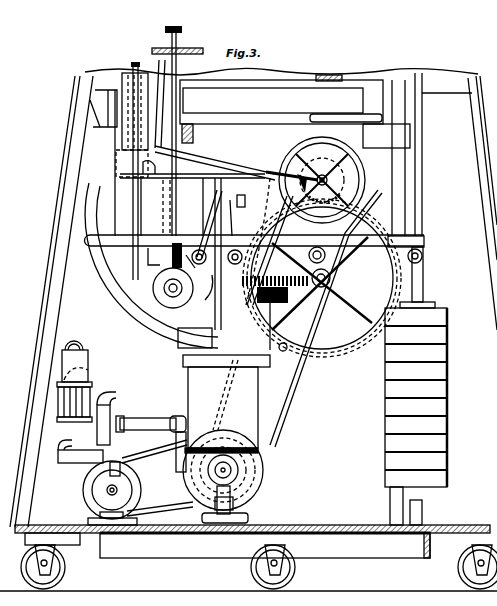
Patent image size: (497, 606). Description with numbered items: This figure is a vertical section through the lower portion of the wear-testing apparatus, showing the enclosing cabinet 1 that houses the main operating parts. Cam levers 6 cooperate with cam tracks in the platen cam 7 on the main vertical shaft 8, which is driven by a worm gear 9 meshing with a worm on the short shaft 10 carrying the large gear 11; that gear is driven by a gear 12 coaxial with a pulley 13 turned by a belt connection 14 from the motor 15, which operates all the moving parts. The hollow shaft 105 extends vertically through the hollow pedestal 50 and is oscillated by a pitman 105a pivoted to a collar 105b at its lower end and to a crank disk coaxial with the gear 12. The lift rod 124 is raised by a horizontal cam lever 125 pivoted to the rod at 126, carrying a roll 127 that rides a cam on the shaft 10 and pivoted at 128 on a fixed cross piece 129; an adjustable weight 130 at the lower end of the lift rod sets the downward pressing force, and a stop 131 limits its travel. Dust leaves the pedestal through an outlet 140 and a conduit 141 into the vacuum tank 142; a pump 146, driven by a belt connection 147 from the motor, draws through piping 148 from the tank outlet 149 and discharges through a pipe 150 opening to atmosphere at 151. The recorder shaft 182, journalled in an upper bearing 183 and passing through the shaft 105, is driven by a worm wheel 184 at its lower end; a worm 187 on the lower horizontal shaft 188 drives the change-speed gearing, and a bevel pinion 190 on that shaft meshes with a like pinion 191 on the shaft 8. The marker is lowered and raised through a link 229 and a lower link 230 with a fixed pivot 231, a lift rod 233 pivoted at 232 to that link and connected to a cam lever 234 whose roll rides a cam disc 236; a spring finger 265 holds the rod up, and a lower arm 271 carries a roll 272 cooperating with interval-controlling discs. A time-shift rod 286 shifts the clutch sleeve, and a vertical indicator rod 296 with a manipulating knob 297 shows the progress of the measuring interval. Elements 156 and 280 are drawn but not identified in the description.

The cabinet 1 is at (47, 281).
The cam levers 6 is at (362, 80).
The platen cam 7 is at (225, 95).
The main vertical shaft 8 is at (242, 196).
The worm gear 9 is at (312, 292).
The short shaft 10 is at (316, 298).
The large gear 11 is at (357, 352).
The gear 12 is at (335, 183).
The pulley 13 is at (366, 181).
The belt connection 14 is at (288, 376).
The motor 15 is at (262, 467).
The hollow pedestal 50 is at (113, 71).
The hollow shaft 105 is at (140, 180).
The pitman 105a is at (203, 179).
The collar 105b is at (161, 178).
The lift rod 124 is at (417, 181).
The horizontal cam lever 125 is at (370, 250).
The pivotal connection 126 is at (423, 256).
The roll 127 is at (317, 247).
The pivot 128 is at (242, 250).
The fixed cross piece 129 is at (262, 220).
The adjustable weight 130 is at (447, 383).
The stop 131 is at (423, 510).
The outlet 140 is at (110, 112).
The conduit 141 is at (62, 207).
The vacuum tank 142 is at (190, 400).
The pump 146 is at (88, 485).
The belt connection 147 is at (152, 510).
The piping 148 is at (141, 420).
The outlet 149 is at (232, 474).
The pipe 150 is at (108, 405).
The atmospheric opening 151 is at (90, 358).
The filter 156 is at (90, 368).
The recorder shaft 182 is at (135, 64).
The upper bearing 183 is at (150, 256).
The worm wheel 184 is at (128, 290).
The worm 187 is at (176, 308).
The lower horizontal shaft 188 is at (207, 317).
The bevel pinion 190 is at (275, 273).
The bevel pinion 191 is at (280, 349).
The link 229 is at (160, 60).
The lower link 230 is at (205, 164).
The fixed pivot 231 is at (303, 196).
The pivot 232 is at (215, 153).
The lift rod 233 is at (229, 213).
The cam lever 234 is at (194, 262).
The cam disc 236 is at (205, 301).
The finger 265 is at (213, 215).
The lower arm 271 is at (199, 249).
The roll 272 is at (172, 254).
The outer guide arc 280 is at (151, 265).
The time-shift rod 286 is at (173, 224).
The vertical indicator rod 296 is at (177, 115).
The manipulating knob 297 is at (183, 31).